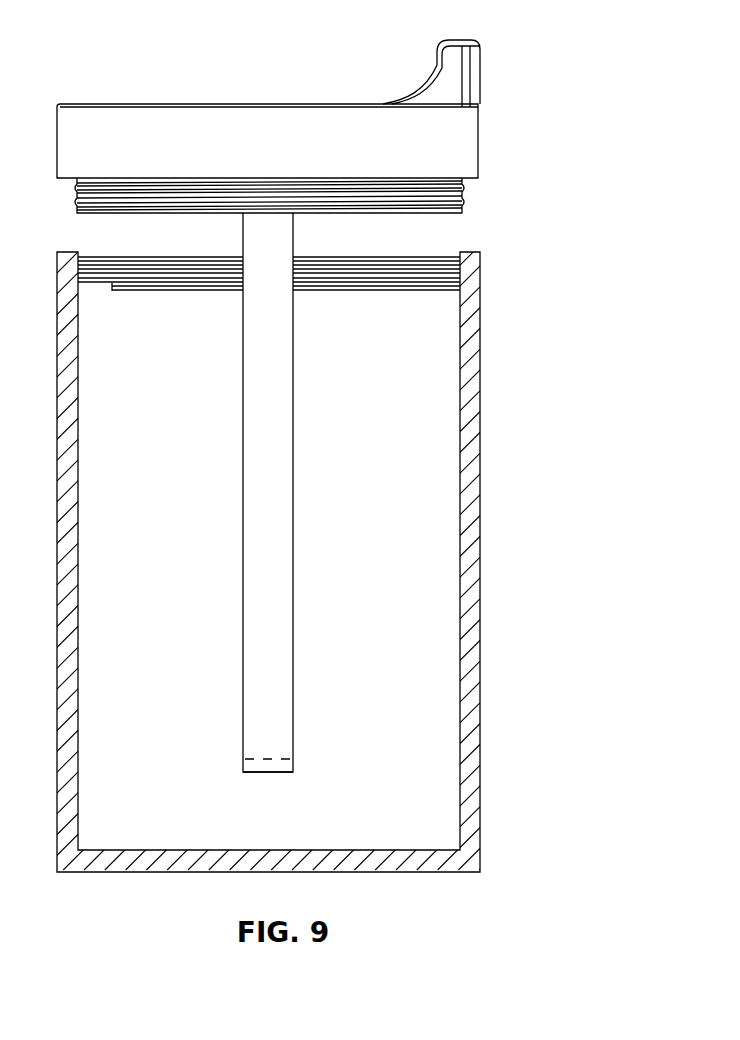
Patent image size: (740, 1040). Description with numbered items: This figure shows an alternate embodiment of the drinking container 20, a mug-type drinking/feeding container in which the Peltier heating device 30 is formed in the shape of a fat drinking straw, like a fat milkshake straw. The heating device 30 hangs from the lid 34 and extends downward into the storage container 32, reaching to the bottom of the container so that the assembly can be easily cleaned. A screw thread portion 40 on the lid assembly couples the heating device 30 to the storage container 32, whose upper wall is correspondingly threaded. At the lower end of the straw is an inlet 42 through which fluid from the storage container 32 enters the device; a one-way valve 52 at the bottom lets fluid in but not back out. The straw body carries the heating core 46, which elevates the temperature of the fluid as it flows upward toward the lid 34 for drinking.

The drinking container 20 is at (530, 233).
The Peltier heating device 30 is at (261, 518).
The storage container 32 is at (482, 558).
The lid 34 is at (475, 90).
The screw thread portion 40 is at (460, 203).
The inlet 42 is at (277, 773).
The heating core 46 is at (250, 418).
The one-way valve 52 is at (270, 757).